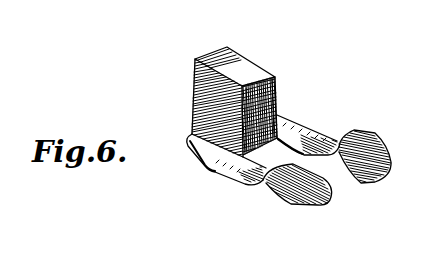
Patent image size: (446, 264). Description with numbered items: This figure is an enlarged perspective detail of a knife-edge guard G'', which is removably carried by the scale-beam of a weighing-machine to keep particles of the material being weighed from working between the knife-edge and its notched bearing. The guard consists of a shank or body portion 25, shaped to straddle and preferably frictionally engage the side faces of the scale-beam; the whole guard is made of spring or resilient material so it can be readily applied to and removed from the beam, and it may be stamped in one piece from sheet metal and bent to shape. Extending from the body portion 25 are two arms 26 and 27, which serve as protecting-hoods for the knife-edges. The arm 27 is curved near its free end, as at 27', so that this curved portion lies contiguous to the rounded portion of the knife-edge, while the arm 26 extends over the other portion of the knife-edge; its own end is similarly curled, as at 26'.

The knife-edge guard G'' is at (285, 137).
The shank or body portion 25 is at (253, 77).
The arm 26 is at (226, 173).
The curled end of base strip 26' is at (290, 198).
The arm 27 is at (308, 124).
The curved portion 27' is at (375, 142).